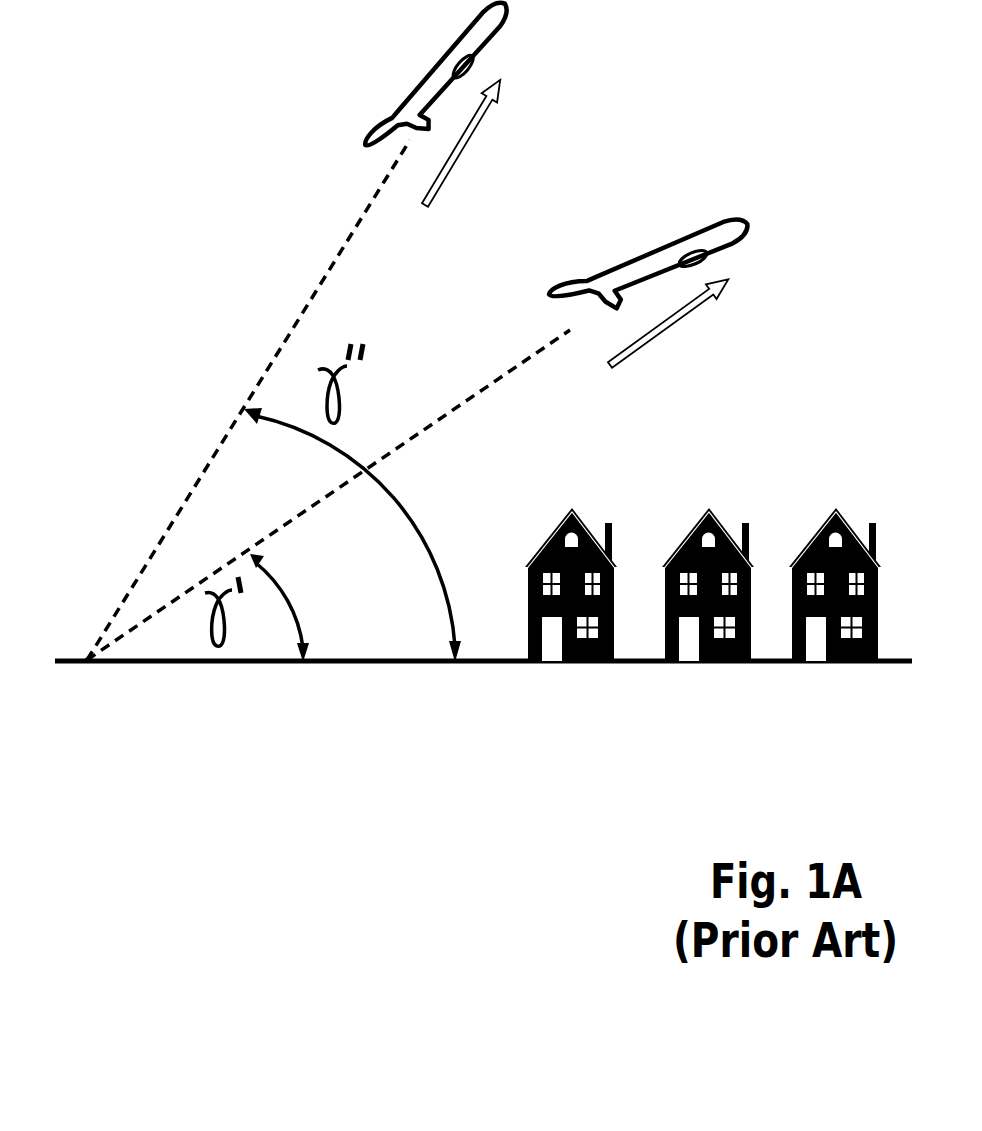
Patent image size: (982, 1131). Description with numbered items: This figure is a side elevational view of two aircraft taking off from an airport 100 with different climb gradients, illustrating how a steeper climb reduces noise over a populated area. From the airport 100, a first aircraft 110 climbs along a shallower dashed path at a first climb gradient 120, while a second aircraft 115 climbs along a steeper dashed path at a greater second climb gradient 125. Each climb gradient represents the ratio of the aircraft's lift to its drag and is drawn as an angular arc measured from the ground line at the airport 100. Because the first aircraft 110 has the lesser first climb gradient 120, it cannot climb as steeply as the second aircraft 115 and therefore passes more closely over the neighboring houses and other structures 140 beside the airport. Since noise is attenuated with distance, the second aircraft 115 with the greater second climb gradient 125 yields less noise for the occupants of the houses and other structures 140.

The airport 100 is at (80, 650).
The first aircraft 110 is at (698, 230).
The second aircraft 115 is at (507, 33).
The climb gradient γ' 120 is at (445, 614).
The climb gradient γ'' 125 is at (300, 422).
The houses and other structures 140 is at (580, 518).